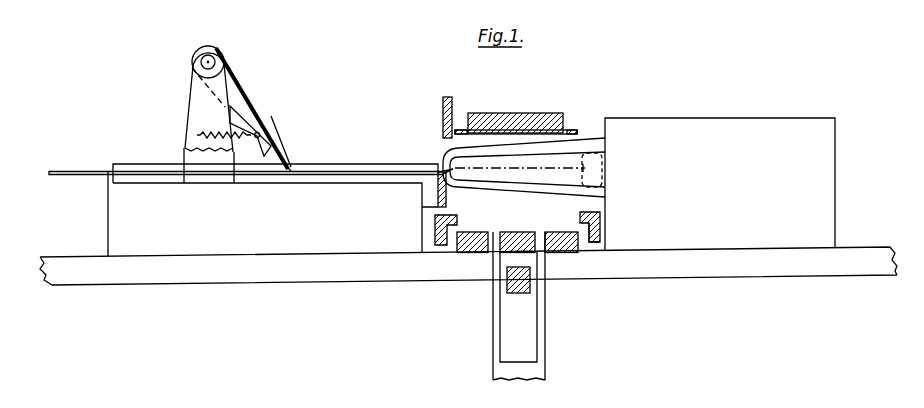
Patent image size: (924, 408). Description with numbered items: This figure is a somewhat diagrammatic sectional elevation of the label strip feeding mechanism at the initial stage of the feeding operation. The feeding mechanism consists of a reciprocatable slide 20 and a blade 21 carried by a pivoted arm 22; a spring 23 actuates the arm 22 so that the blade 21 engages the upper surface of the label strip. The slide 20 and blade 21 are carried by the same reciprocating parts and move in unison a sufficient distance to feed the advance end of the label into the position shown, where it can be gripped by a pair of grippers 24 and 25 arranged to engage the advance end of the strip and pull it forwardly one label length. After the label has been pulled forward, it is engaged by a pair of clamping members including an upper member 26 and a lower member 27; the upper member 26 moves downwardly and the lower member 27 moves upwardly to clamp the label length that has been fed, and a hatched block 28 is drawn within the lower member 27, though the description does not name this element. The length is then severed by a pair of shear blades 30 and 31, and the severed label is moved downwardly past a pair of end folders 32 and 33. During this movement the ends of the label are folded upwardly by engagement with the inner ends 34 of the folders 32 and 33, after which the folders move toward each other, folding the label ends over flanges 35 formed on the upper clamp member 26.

The reciprocatable slide 20 is at (358, 165).
The blade 21 is at (289, 163).
The pivoted arm 22 is at (250, 98).
The spring 23 is at (242, 128).
The gripper 24 is at (443, 157).
The gripper 25 is at (474, 190).
The upper clamp member 26 is at (543, 113).
The lower clamp member 27 is at (540, 267).
The weight block 28 is at (517, 293).
The shear blade 30 is at (443, 108).
The shear blade 31 is at (438, 191).
The end folder 32 is at (435, 223).
The end folder 33 is at (600, 227).
The inner ends of the folders 34 is at (580, 217).
The flanges 35 is at (572, 131).